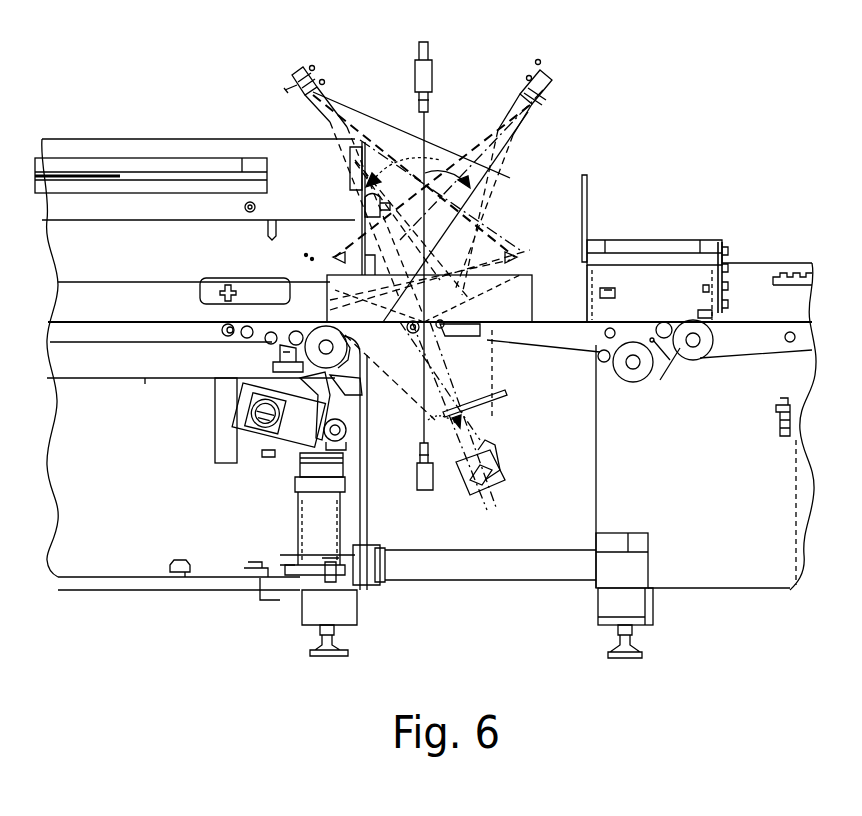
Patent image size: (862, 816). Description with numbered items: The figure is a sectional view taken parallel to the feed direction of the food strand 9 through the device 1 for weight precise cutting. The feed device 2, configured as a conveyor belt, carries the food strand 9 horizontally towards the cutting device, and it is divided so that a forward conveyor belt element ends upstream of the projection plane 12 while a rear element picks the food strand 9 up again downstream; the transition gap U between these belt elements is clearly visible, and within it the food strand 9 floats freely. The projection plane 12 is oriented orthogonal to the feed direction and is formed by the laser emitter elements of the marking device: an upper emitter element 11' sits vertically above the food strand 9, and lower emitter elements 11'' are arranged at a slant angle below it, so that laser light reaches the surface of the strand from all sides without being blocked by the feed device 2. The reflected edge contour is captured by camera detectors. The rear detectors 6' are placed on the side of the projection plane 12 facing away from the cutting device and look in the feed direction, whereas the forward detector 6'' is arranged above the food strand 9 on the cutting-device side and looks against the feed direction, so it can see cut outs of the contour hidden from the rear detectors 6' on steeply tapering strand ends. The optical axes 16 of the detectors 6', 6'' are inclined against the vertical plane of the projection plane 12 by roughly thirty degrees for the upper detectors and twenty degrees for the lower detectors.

The device 1 is at (585, 168).
The feed device 2 is at (538, 320).
The food strand 9 is at (515, 300).
The projection plane 12 is at (430, 130).
The optical axes 16 is at (345, 152).
The upper emitter element 11' is at (399, 70).
The lower emitter elements 11'' is at (440, 539).
The rear detectors 6' is at (470, 328).
The forward detector 6'' is at (383, 170).
The transition gap U is at (432, 335).